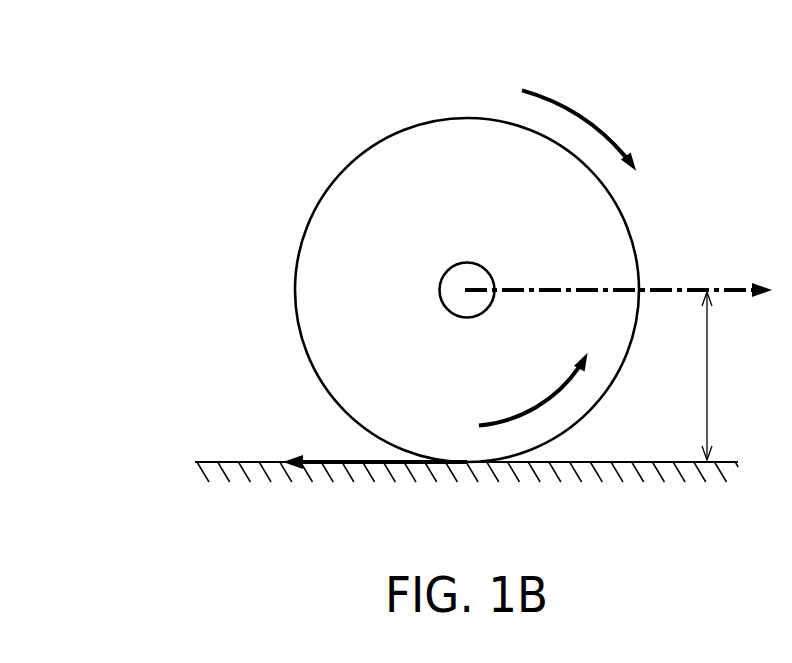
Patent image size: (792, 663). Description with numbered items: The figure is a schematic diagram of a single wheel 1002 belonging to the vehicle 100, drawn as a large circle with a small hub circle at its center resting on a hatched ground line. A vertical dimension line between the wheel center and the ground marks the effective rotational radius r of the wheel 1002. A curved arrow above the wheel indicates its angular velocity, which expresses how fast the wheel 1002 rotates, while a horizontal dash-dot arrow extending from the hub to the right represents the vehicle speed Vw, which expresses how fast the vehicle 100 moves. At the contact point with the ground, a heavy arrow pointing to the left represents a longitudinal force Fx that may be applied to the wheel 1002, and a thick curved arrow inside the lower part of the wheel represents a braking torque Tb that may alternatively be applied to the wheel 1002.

The vehicle 100 is at (206, 66).
The wheel 1002 is at (302, 233).
The vehicle speed Vw is at (618, 272).
The longitudinal force Fx is at (367, 445).
The effective rotational radius r is at (715, 376).
The braking torque Tb is at (533, 389).